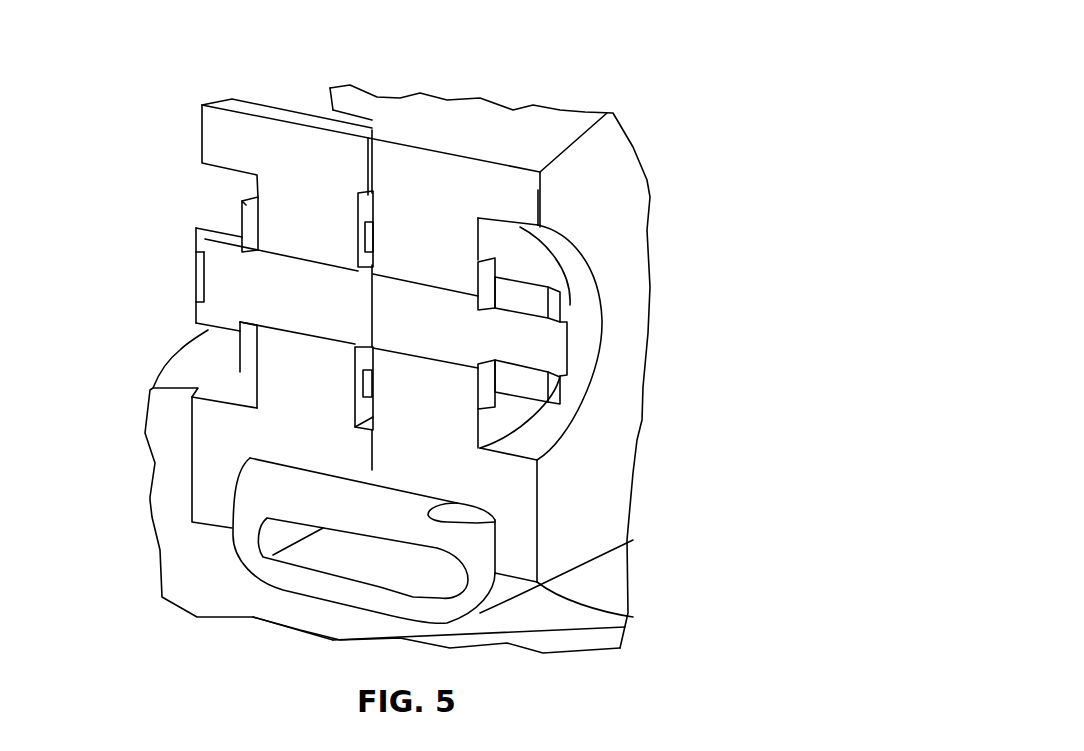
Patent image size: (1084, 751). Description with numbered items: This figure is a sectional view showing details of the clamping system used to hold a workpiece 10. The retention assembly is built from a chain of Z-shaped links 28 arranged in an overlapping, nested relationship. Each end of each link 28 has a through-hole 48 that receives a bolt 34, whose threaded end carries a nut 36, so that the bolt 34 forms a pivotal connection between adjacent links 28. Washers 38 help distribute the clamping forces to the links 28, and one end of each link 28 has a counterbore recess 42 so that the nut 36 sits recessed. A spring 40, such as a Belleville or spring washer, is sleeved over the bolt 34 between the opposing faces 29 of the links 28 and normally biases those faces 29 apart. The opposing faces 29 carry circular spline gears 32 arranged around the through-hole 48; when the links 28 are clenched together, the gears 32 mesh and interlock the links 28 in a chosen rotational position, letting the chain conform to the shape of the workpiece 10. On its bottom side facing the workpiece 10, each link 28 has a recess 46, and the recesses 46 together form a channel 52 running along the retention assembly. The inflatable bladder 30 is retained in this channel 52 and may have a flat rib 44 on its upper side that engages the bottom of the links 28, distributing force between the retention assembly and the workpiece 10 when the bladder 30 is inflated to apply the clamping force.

The workpiece 10 is at (197, 577).
The link 28 is at (230, 136).
The opposing face 29 is at (367, 357).
The inflatable bladder 30 is at (630, 620).
The circular spline gear 32 is at (373, 100).
The bolt 34 is at (557, 345).
The nut 36 is at (560, 307).
The washer 38 is at (250, 217).
The spring 40 is at (370, 238).
The counterbore recess 42 is at (598, 355).
The flat rib 44 is at (458, 503).
The recess 46 is at (494, 520).
The through-hole 48 is at (302, 258).
The channel 52 is at (250, 487).